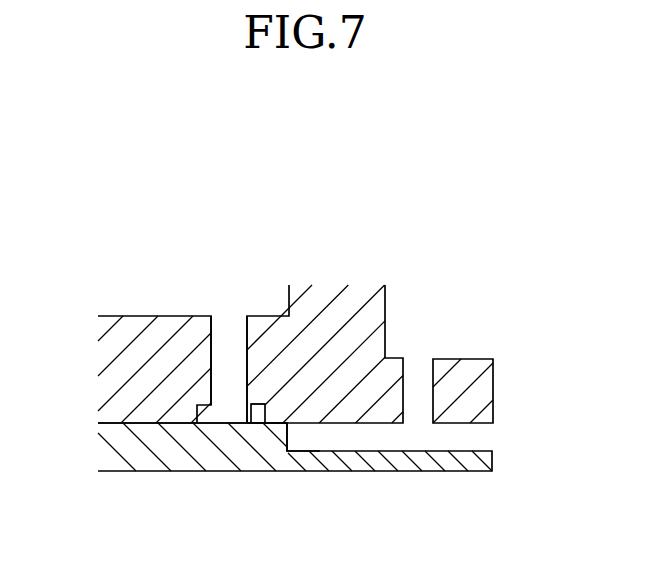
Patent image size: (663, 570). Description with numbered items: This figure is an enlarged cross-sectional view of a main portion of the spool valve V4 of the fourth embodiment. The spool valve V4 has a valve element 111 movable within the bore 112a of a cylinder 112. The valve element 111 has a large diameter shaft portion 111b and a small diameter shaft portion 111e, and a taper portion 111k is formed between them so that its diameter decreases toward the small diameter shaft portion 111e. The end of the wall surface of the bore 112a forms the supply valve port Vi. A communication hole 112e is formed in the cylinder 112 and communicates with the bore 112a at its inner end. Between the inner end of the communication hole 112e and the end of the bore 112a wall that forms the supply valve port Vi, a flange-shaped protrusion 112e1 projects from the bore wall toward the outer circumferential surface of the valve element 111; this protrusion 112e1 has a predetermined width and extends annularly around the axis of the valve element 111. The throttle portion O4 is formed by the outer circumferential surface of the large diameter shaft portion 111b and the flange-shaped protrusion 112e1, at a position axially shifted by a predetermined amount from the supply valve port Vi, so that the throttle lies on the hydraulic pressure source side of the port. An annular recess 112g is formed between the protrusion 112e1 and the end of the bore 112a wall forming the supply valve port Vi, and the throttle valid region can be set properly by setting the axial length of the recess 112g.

The valve element 111 is at (142, 471).
The large diameter shaft portion 111b is at (113, 423).
The taper portion 111k is at (288, 427).
The small diameter shaft portion 111e is at (463, 450).
The cylinder 112 is at (112, 325).
The communication hole 112e is at (212, 333).
The bore 112a is at (347, 423).
The annular recess 112g is at (255, 412).
The flange-shaped protrusion 112e1 is at (247, 412).
The supply valve port Vi is at (260, 412).
The throttle portion O4 is at (249, 424).
The spool valve V4 is at (416, 483).